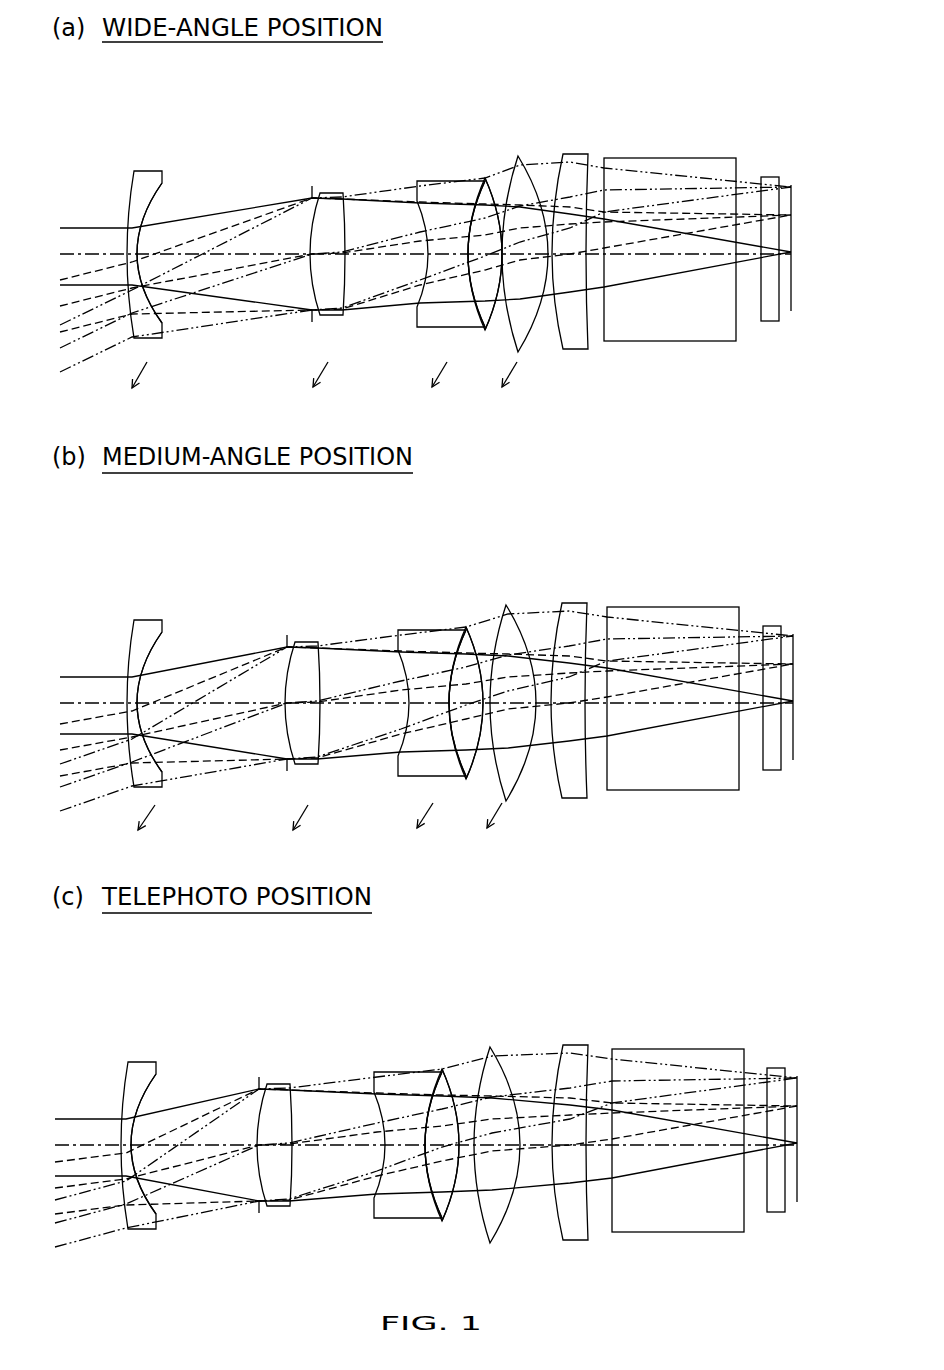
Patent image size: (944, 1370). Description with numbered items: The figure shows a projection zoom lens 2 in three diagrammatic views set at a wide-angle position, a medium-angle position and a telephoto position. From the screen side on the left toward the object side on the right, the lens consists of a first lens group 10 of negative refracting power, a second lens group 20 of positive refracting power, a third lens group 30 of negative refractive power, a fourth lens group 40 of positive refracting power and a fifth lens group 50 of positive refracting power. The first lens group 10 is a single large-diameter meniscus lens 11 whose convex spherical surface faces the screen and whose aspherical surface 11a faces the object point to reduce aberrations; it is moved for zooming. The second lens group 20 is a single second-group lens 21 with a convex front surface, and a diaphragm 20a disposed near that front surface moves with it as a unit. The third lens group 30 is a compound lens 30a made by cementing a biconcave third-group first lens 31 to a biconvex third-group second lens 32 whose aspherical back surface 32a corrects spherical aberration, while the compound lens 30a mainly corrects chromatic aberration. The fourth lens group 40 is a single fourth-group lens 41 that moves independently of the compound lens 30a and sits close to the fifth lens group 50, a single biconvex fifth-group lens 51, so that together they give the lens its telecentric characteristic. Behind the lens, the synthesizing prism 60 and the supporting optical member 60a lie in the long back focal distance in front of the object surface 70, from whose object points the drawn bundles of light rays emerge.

The projection zoom lens 2 is at (380, 147).
The first lens group 10 is at (172, 158).
The meniscus lens 11 is at (131, 184).
The aspherical surface 11a is at (158, 320).
The second lens group 20 is at (349, 148).
The diaphragm 20a is at (312, 189).
The second-group lens 21 is at (331, 193).
The third lens group 30 is at (477, 106).
The compound lens 30a is at (460, 145).
The third-group first lens 31 is at (438, 181).
The third-group second lens 32 is at (487, 178).
The aspherical back surface 32a is at (492, 328).
The fourth lens group 40 is at (535, 120).
The fourth-group lens 41 is at (518, 156).
The fifth lens group 50 is at (597, 120).
The fifth-group lens 51 is at (577, 154).
The synthesizing prism 60 is at (697, 158).
The optical member 60a is at (771, 177).
The object surface 70 is at (792, 190).